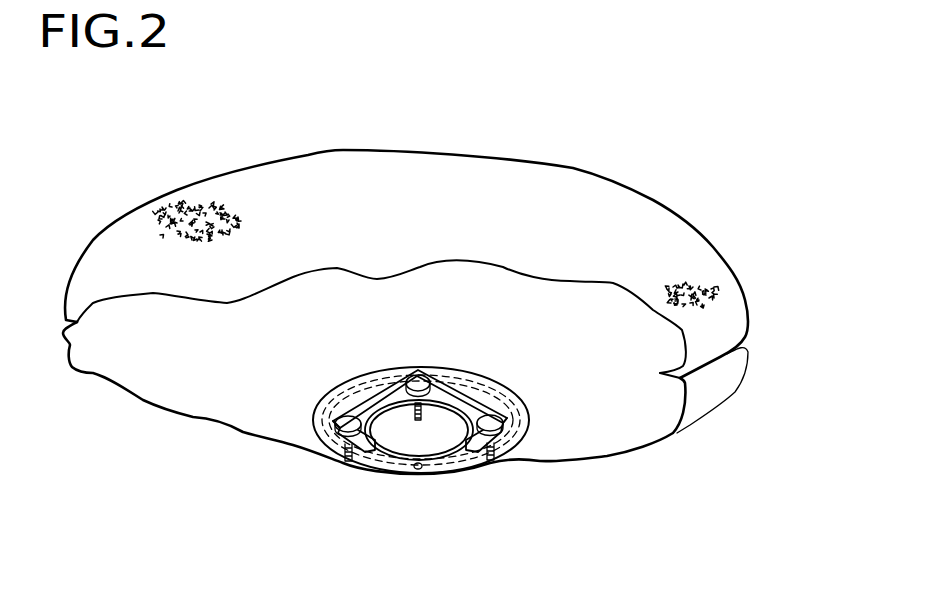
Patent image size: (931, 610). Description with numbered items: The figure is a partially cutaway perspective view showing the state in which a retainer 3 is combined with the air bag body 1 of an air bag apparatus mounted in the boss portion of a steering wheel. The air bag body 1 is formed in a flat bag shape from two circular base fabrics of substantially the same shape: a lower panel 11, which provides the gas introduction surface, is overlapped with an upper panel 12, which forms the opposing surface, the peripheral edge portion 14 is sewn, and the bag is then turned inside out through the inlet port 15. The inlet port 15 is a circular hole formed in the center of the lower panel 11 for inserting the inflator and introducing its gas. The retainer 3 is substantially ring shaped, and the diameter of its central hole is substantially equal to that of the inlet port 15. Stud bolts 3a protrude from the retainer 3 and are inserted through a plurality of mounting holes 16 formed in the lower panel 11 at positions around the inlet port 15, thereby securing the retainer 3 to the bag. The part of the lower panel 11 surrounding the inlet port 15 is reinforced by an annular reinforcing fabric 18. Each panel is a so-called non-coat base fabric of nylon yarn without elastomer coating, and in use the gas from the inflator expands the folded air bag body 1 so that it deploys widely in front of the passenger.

The air bag body 1 is at (597, 127).
The lower panel 11 is at (597, 448).
The upper panel 12 is at (440, 160).
The peripheral edge portion 14 is at (748, 352).
The inlet port 15 is at (397, 458).
The mounting holes 16 is at (422, 468).
The annular reinforcing fabric 18 is at (500, 392).
The retainer 3 is at (352, 462).
The stud bolt 3a is at (427, 408).